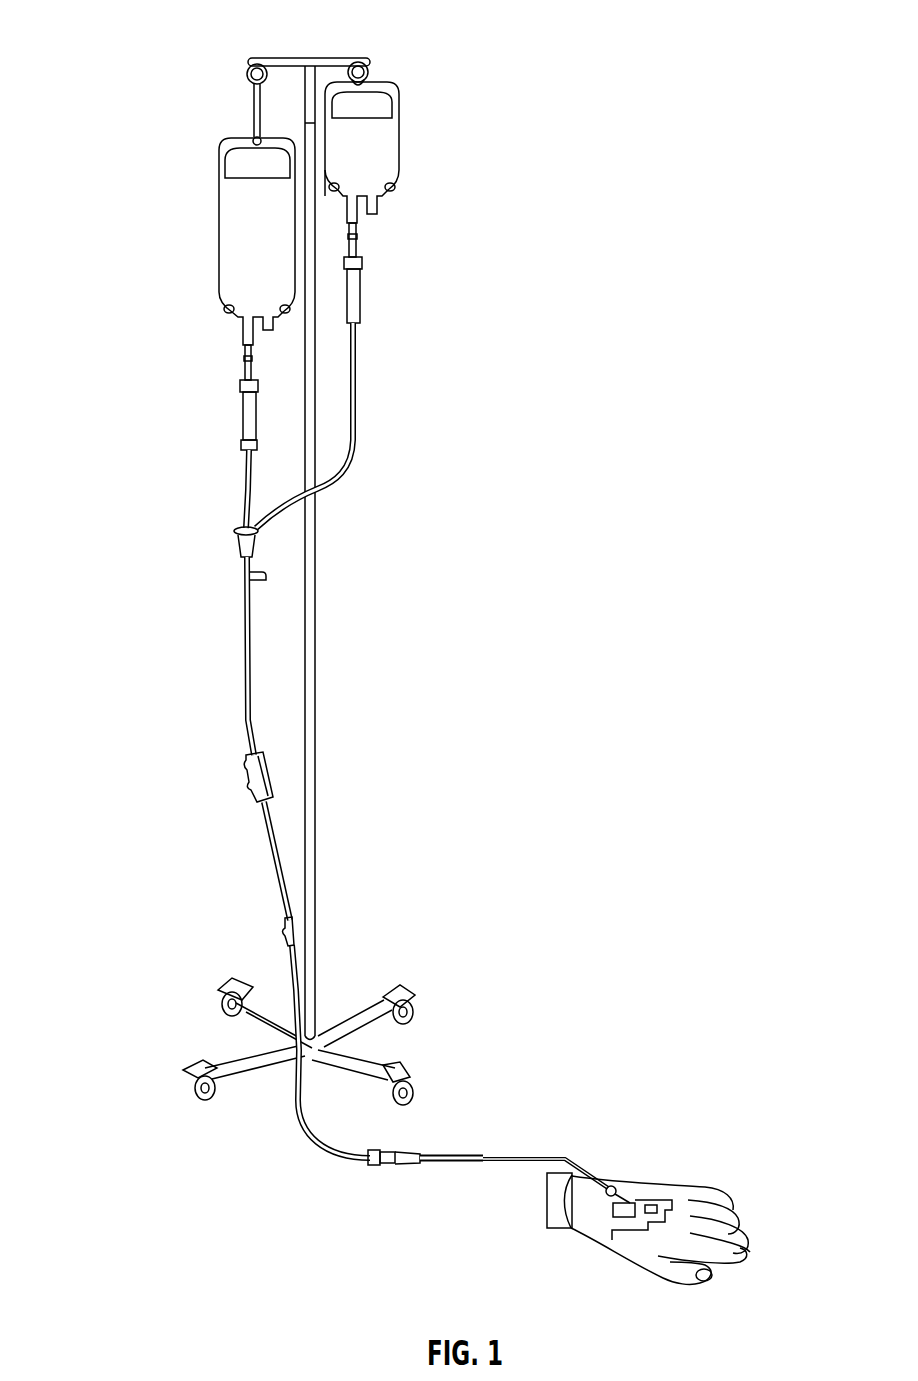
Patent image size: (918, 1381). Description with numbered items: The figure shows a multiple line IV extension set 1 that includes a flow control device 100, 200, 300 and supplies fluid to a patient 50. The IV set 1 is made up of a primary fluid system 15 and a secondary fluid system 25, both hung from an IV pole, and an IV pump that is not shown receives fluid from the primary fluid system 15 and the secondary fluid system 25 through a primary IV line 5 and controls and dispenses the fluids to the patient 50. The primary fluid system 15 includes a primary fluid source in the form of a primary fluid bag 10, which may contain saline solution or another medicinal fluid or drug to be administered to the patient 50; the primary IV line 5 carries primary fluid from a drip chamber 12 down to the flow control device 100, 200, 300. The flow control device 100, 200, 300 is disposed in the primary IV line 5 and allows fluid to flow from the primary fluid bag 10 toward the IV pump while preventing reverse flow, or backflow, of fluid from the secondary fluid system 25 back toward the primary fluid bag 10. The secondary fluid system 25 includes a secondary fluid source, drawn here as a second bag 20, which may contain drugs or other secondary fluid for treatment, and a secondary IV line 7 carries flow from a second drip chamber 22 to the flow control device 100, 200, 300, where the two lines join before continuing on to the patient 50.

The multiple line IV extension set 1 is at (132, 22).
The primary fluid bag 10 is at (232, 240).
The primary fluid system 15 is at (184, 351).
The drip chamber 12 is at (242, 416).
The primary IV line 5 is at (243, 492).
The flow control device 100 is at (228, 537).
The flow control device 200 is at (246, 542).
The flow control device 300 is at (246, 542).
The second fluid container / IV bag 20 is at (386, 142).
The secondary fluid system 25 is at (452, 217).
The drip chamber 22 is at (362, 300).
The secondary IV line 7 is at (356, 390).
The patient 50 is at (698, 1174).